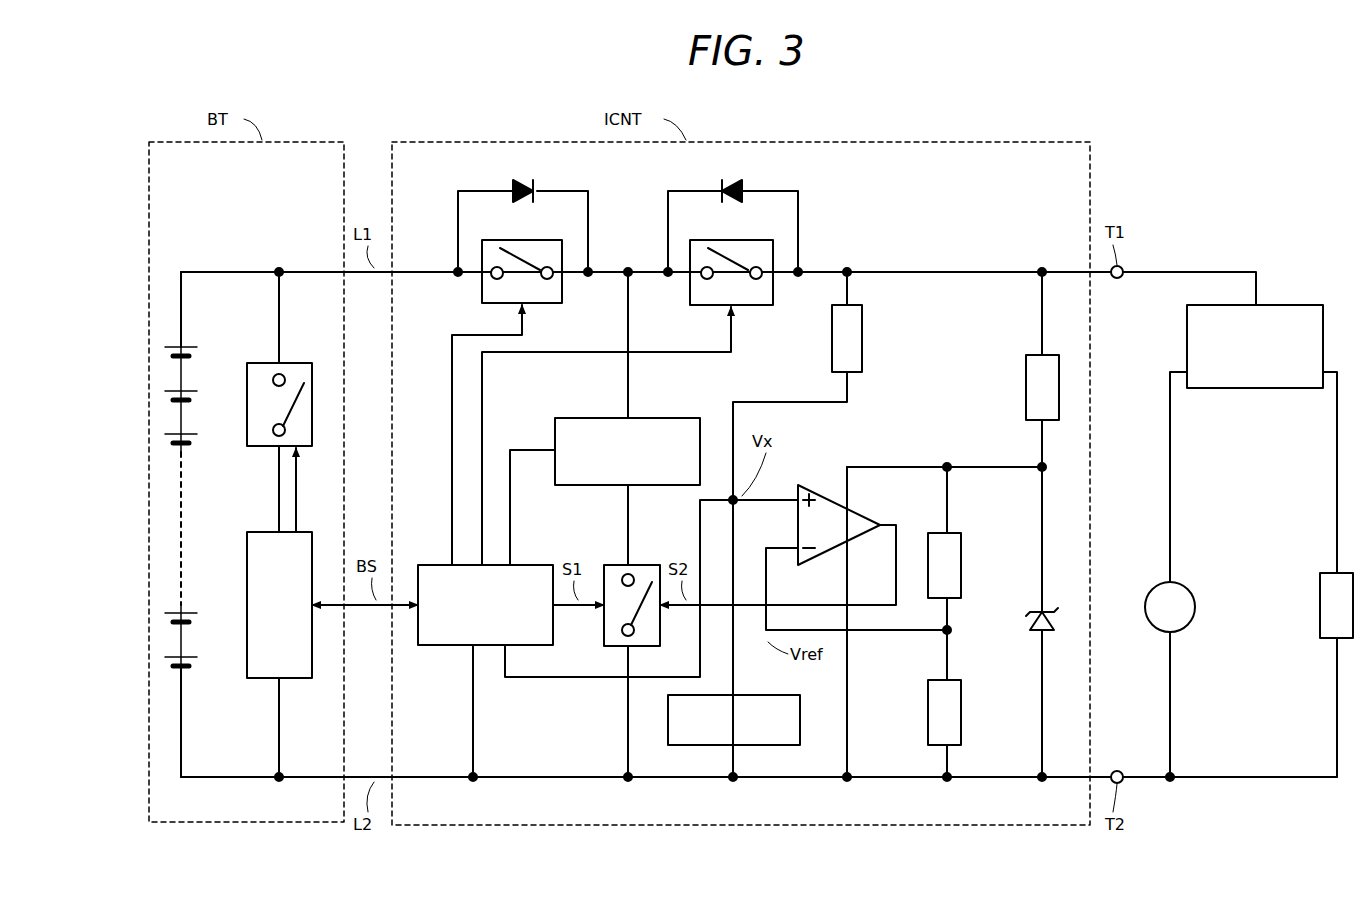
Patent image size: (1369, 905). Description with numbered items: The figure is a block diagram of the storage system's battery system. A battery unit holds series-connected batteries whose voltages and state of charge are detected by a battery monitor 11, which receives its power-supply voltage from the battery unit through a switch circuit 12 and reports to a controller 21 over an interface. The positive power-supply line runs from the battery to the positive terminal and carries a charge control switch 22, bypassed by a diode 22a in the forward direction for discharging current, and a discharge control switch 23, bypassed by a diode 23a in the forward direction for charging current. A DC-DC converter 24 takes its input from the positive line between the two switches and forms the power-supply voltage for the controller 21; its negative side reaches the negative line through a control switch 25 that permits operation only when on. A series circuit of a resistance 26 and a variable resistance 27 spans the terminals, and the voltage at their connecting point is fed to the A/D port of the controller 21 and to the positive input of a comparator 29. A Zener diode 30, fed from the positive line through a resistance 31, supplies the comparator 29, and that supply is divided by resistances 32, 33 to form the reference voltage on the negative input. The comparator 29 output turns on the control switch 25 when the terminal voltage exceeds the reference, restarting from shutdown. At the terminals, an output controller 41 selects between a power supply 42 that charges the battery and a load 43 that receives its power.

The battery monitor 11 is at (246, 552).
The switch circuit 12 is at (246, 396).
The controller 21 is at (422, 562).
The charge control switch 22 is at (540, 306).
The diode 22a is at (522, 180).
The discharge control switch 23 is at (706, 306).
The diode 23a is at (730, 180).
The DC-DC converter 24 is at (590, 416).
The control switch 25 is at (614, 562).
The resistance 26 is at (830, 350).
The variable resistance 27 is at (766, 694).
The comparator 29 is at (800, 484).
The Zener diode 30 is at (1030, 622).
The resistance 31 is at (1024, 396).
The resistance 32 is at (962, 586).
The resistance 33 is at (962, 730).
The output controller 41 is at (1296, 304).
The power supply 42 is at (1196, 592).
The load 43 is at (1318, 594).